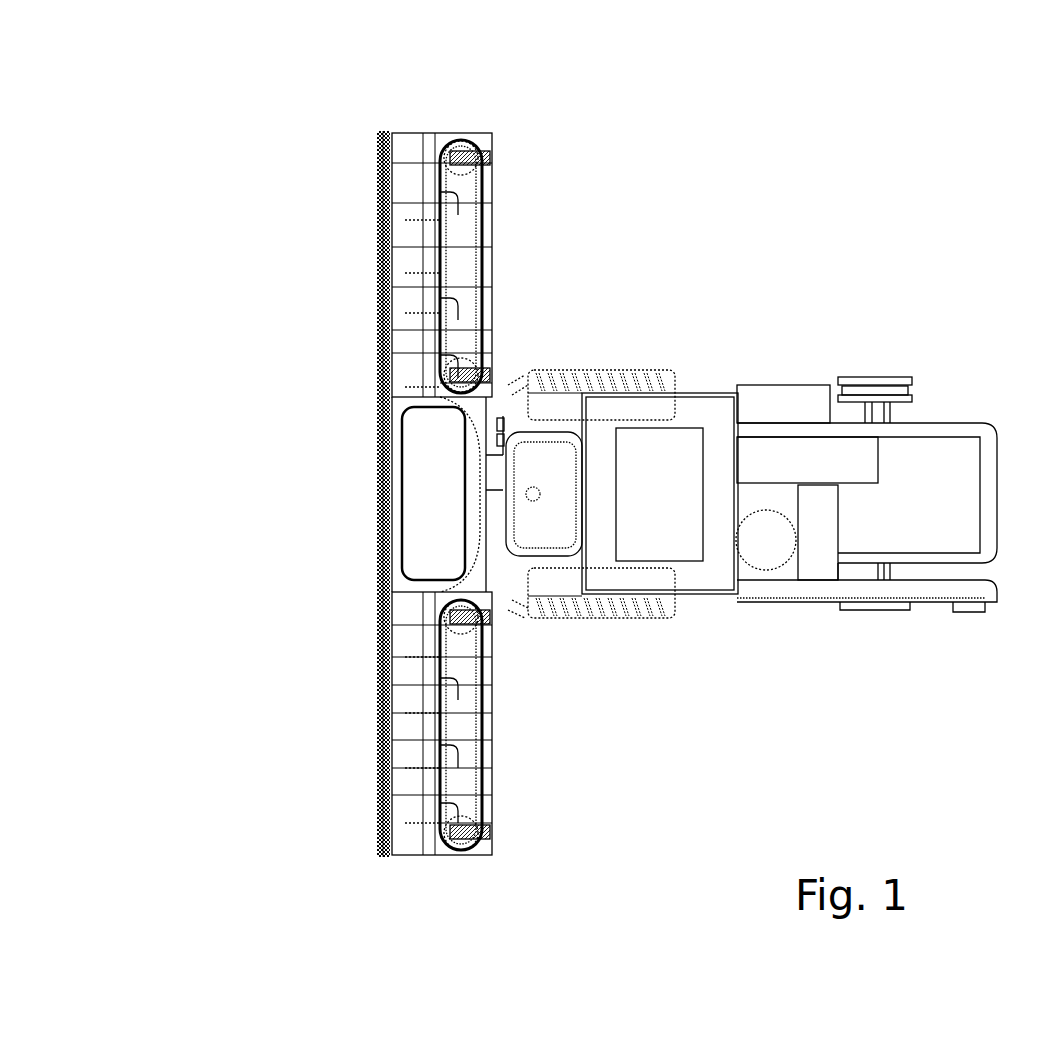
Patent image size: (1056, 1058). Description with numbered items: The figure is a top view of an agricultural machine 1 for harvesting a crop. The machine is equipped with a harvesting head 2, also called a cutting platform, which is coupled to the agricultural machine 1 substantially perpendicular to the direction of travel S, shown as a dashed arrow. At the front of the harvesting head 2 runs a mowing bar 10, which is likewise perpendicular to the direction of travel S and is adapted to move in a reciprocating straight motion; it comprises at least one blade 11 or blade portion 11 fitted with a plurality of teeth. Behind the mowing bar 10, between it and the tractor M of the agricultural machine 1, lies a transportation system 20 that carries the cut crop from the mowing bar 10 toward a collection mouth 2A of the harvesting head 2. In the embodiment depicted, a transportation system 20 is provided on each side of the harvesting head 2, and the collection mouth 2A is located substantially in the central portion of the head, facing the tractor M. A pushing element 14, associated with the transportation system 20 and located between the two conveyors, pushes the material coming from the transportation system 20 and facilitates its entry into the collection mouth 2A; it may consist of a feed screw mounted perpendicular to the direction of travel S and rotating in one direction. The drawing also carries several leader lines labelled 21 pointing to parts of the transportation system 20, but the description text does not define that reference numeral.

The agricultural machine 1 is at (965, 218).
The harvesting head 2 is at (493, 132).
The collection mouth 2A is at (495, 470).
The mowing bar 10 is at (385, 120).
The blade 11 is at (390, 634).
The pushing element 14 is at (415, 529).
The transportation system 20 is at (500, 237).
The conveying rods / tines 21 is at (448, 192).
The direction of travel S is at (180, 493).
The tractor M is at (693, 575).